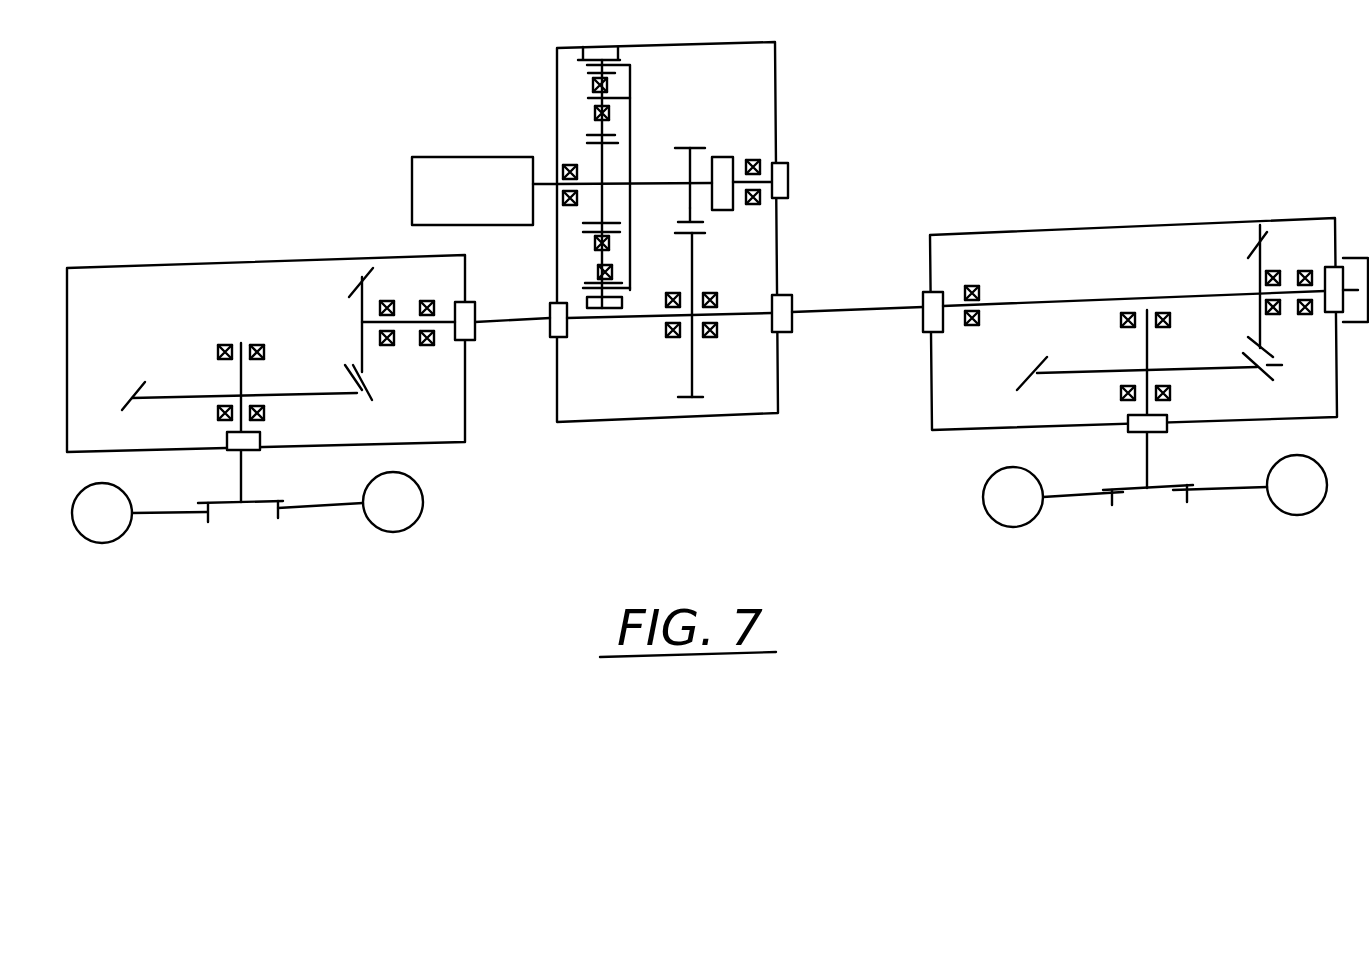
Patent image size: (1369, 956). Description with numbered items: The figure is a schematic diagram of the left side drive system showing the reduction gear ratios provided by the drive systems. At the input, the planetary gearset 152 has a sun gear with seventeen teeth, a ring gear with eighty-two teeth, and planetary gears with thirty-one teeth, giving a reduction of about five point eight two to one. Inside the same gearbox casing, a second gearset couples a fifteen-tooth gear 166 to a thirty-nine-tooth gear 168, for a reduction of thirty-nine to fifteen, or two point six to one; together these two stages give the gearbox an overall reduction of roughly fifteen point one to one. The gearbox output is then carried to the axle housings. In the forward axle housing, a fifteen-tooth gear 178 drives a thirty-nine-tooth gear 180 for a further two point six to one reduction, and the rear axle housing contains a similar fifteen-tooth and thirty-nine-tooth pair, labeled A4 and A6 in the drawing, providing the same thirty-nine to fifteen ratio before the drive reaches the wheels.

The gearset 152 is at (540, 98).
The gear 166 is at (693, 208).
The gear 168 is at (693, 357).
The gear 178 is at (362, 345).
The gear 180 is at (178, 397).
The axle gear A4 is at (1257, 275).
The axle gear A6 is at (1095, 373).